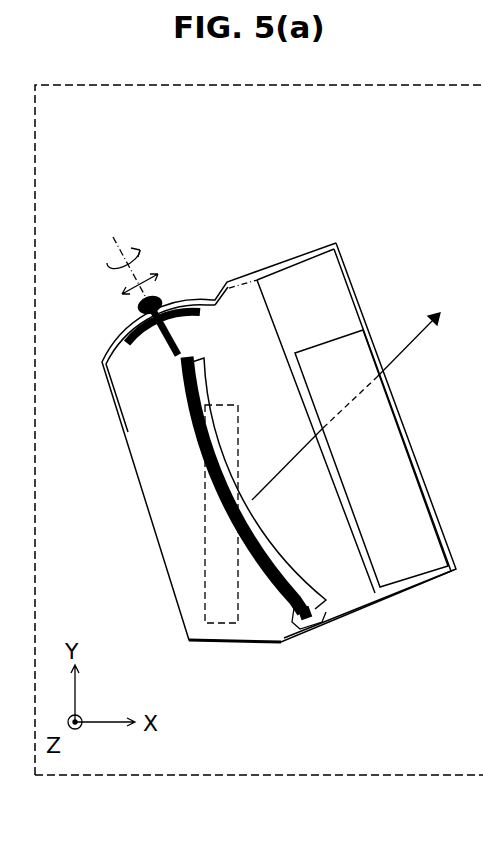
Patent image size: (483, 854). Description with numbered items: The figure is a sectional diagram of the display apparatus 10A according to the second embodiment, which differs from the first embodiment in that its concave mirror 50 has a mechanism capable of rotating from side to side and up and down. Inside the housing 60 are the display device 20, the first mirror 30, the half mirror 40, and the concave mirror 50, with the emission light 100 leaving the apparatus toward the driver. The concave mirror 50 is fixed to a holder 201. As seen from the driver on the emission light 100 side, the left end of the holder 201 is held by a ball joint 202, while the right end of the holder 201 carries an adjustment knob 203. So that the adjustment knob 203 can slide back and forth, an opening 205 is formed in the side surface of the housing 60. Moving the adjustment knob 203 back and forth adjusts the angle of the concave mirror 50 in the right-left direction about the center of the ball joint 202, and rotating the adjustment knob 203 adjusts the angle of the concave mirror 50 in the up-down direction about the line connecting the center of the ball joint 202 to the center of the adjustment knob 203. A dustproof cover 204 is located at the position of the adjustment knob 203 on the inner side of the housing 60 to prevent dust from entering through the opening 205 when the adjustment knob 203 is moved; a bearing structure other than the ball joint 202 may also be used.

The display apparatus 10A is at (134, 502).
The display device 20 is at (205, 603).
The first mirror 30 is at (393, 433).
The half mirror 40 is at (337, 277).
The concave mirror 50 is at (280, 558).
The housing 60 is at (267, 267).
The emission light 100 is at (393, 357).
The holder 201 is at (190, 417).
The ball joint 202 is at (318, 622).
The adjustment knob 203 is at (163, 300).
The dustproof cover 204 is at (127, 342).
The opening 205 is at (140, 317).